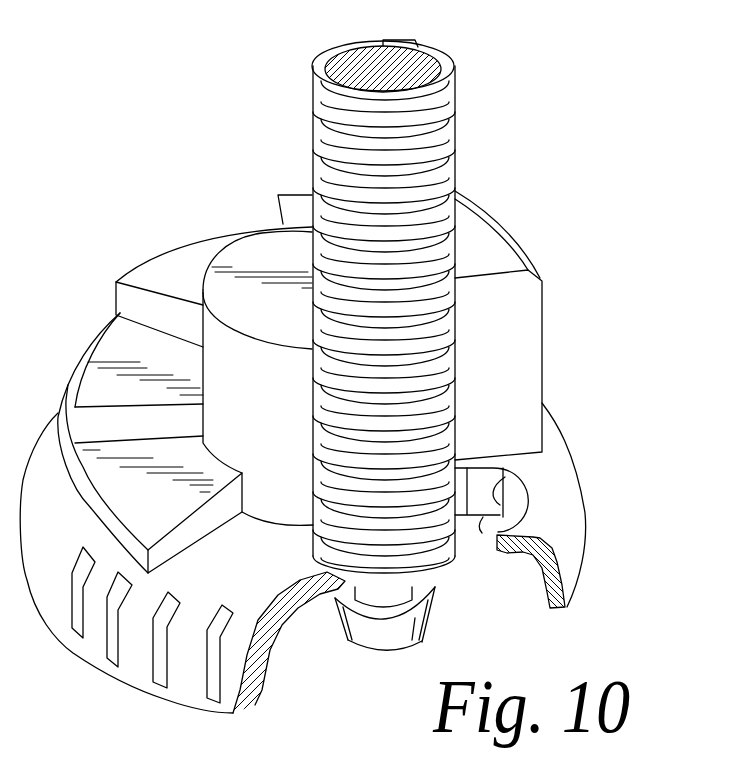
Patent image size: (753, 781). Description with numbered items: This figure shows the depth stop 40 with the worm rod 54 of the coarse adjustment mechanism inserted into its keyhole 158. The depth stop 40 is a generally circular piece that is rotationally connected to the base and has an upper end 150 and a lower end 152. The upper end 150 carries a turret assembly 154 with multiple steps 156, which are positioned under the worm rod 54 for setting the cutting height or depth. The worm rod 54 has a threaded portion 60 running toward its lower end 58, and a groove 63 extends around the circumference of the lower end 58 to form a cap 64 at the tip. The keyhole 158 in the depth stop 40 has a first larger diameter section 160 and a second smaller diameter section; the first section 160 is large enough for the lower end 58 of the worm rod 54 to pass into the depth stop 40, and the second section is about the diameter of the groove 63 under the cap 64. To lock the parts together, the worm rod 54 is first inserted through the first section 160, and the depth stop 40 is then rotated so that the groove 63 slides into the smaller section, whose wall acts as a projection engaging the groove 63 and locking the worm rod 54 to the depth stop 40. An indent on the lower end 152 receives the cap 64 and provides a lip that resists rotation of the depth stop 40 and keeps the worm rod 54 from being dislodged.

The depth stop 40 is at (557, 462).
The worm rod 54 is at (432, 50).
The lower end 58 is at (385, 652).
The threaded portion 60 is at (443, 100).
The groove 63 is at (387, 593).
The cap 64 is at (417, 627).
The upper end 150 is at (255, 572).
The lower end 152 is at (277, 627).
The turret assembly 154 is at (520, 363).
The steps 156 is at (182, 277).
The keyhole 158 is at (492, 508).
The first larger diameter section 160 is at (517, 477).